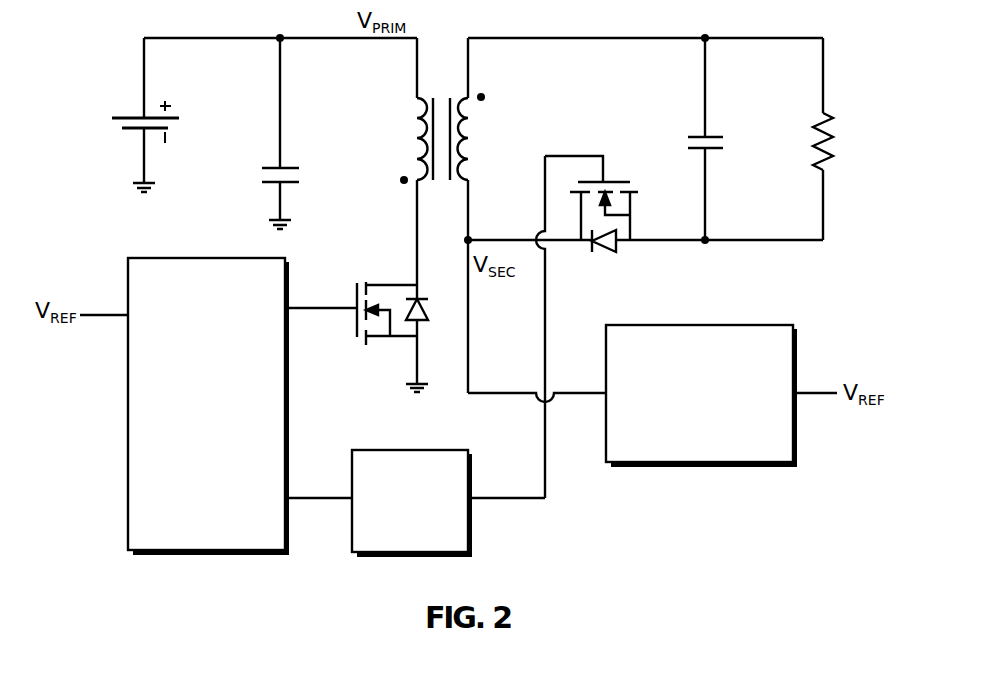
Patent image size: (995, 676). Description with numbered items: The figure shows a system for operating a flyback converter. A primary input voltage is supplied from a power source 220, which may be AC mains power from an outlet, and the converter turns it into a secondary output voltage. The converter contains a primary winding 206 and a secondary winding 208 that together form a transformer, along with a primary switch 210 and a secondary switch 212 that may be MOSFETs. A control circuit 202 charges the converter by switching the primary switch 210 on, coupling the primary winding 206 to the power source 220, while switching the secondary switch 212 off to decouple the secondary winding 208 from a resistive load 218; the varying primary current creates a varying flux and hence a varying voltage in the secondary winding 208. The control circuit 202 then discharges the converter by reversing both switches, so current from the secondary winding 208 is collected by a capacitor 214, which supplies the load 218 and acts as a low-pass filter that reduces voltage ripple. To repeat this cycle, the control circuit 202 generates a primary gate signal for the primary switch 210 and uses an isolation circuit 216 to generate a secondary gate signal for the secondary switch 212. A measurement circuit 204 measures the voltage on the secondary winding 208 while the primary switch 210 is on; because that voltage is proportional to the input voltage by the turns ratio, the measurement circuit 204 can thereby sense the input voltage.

The control circuit 202 is at (208, 406).
The measurement circuit 204 is at (701, 396).
The primary winding 206 is at (412, 111).
The secondary winding 208 is at (486, 109).
The primary switch 210 is at (371, 286).
The secondary switch 212 is at (610, 187).
The capacitor 214 is at (729, 139).
The isolation circuit 216 is at (412, 503).
The resistive load 218 is at (847, 141).
The power source 220 is at (168, 146).